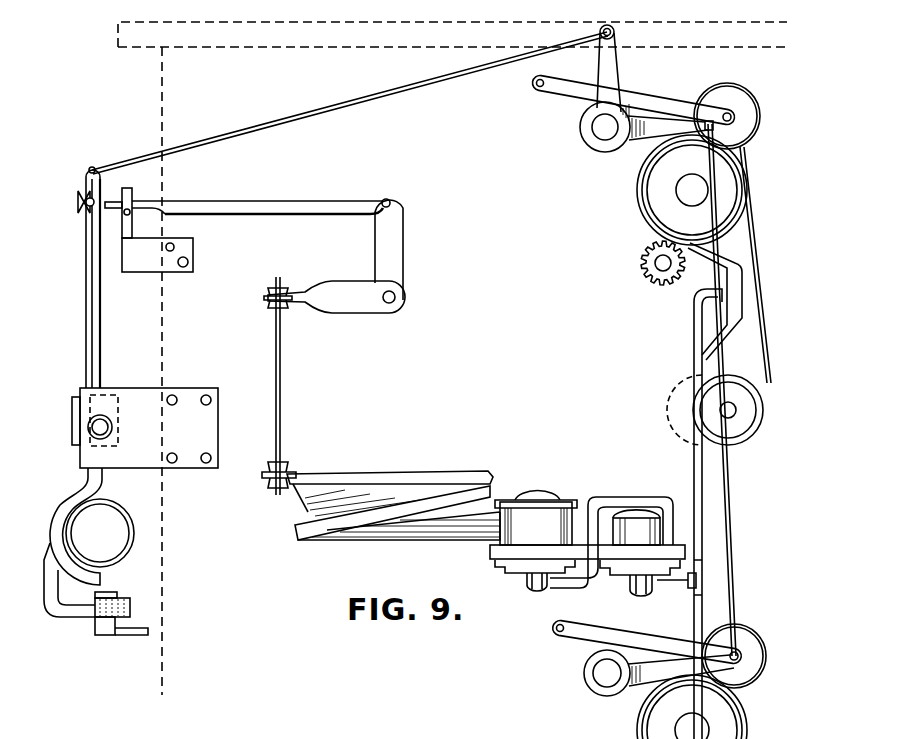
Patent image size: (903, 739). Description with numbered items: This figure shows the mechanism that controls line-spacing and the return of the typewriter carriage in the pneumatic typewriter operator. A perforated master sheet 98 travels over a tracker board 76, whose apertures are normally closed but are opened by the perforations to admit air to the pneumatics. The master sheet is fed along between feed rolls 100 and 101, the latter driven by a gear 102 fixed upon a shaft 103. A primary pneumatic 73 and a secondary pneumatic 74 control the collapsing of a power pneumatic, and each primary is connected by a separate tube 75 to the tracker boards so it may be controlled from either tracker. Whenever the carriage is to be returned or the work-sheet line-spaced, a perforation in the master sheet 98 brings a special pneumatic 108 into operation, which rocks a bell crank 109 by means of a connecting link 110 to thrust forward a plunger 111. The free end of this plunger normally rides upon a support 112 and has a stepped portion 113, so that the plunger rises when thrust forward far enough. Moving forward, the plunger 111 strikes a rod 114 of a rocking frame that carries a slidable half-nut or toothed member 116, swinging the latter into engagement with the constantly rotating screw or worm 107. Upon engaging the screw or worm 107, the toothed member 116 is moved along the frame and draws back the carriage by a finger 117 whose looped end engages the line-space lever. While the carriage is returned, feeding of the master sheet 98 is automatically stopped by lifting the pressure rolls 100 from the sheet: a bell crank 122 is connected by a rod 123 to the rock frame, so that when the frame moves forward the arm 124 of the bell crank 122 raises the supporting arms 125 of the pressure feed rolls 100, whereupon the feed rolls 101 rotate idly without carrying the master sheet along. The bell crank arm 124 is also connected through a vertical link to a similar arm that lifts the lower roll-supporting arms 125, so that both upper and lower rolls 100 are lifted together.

The primary pneumatic 73 is at (630, 520).
The secondary pneumatic 74 is at (555, 500).
The tube 75 is at (672, 583).
The tracker board 76 is at (738, 283).
The master sheet 98 is at (760, 310).
The feed roll 100 is at (745, 112).
The feed roll 101 is at (737, 183).
The gear 102 is at (652, 282).
The shaft 103 is at (656, 263).
The screw or worm 107 is at (106, 520).
The special pneumatic 108 is at (352, 488).
The bell crank 109 is at (350, 306).
The connecting link 110 is at (282, 392).
The plunger 111 is at (278, 206).
The support 112 is at (130, 207).
The stepped portion 113 is at (170, 212).
The rod 114 is at (78, 205).
The toothed member 116 is at (58, 517).
The finger 117 is at (63, 608).
The bell crank 122 is at (600, 70).
The rod 123 is at (248, 123).
The arm 124 is at (657, 130).
The supporting arm 125 is at (655, 103).